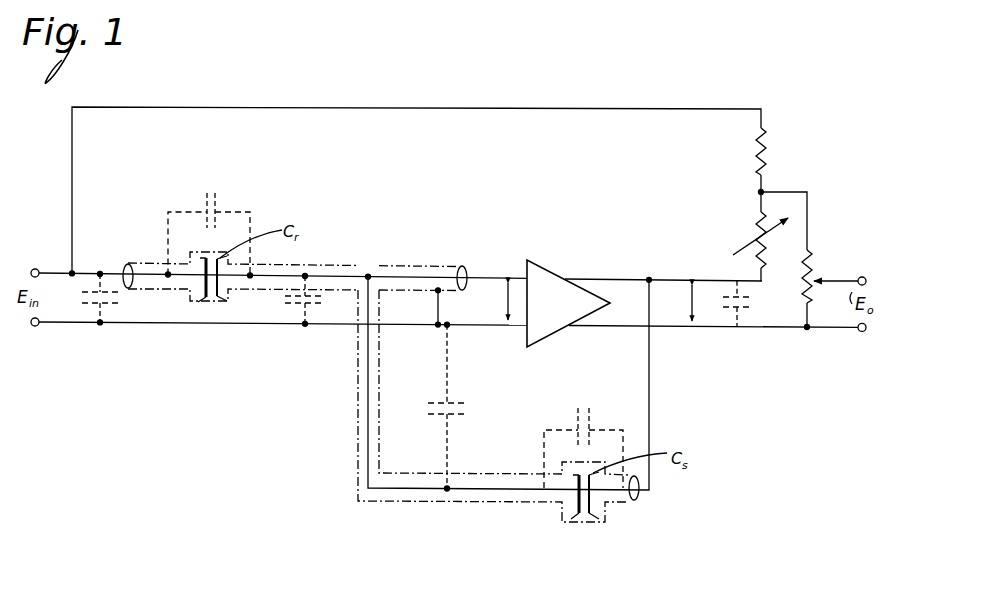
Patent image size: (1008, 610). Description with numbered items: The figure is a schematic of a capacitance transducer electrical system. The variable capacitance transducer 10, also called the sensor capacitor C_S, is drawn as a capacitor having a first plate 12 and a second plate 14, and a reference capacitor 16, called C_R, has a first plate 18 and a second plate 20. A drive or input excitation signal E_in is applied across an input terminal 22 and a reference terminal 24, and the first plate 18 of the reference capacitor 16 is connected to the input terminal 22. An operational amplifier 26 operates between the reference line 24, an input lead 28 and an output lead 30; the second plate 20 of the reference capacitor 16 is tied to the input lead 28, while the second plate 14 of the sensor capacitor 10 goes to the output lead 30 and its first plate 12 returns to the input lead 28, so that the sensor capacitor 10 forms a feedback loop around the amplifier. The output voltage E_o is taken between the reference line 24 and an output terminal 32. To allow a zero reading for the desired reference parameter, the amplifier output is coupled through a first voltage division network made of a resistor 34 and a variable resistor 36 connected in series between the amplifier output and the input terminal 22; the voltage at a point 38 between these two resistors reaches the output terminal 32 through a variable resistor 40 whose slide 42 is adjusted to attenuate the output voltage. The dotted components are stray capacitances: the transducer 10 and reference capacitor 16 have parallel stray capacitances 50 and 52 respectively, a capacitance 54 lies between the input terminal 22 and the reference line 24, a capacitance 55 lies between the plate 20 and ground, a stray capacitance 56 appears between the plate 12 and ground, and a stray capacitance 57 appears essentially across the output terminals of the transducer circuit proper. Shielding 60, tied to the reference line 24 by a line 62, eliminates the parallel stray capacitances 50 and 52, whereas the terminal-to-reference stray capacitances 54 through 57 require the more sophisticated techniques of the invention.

The capacitance transducer 10 is at (551, 519).
The first plate 12 is at (577, 510).
The second plate 14 is at (595, 520).
The reference capacitor 16 is at (178, 299).
The first plate 18 is at (201, 300).
The second plate 20 is at (228, 300).
The input terminal 22 is at (35, 268).
The reference terminal 24 is at (35, 327).
The operational amplifier 26 is at (550, 272).
The input lead 28 is at (515, 277).
The output lead 30 is at (603, 278).
The output terminal 32 is at (863, 277).
The resistor 34 is at (765, 147).
The variable resistor 36 is at (782, 224).
The point 38 is at (758, 194).
The variable resistor 40 is at (805, 285).
The slide 42 is at (832, 281).
The stray capacitance 50 is at (602, 429).
The stray capacitance 52 is at (219, 195).
The capacitance 54 is at (88, 290).
The capacitance 55 is at (290, 306).
The stray capacitance 56 is at (433, 418).
The stray capacitance 57 is at (723, 310).
The shielding 60 is at (357, 480).
The line 62 is at (438, 305).